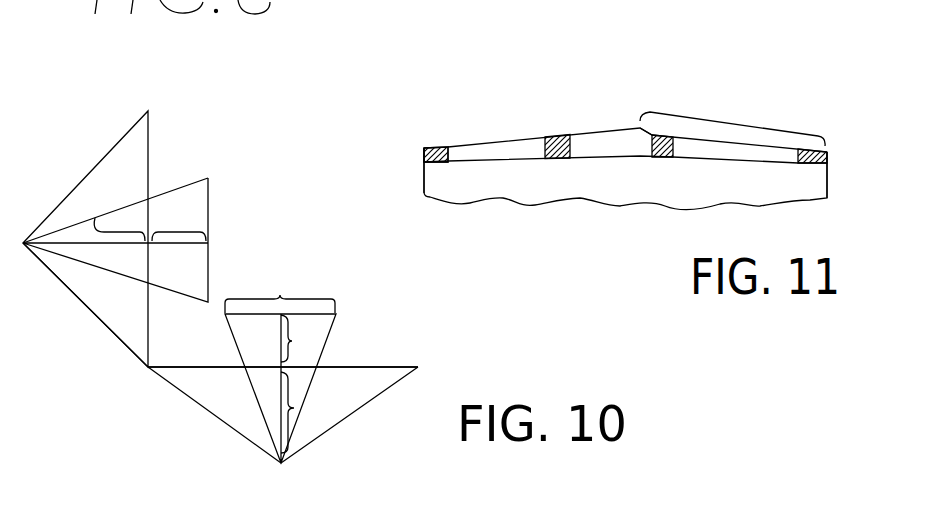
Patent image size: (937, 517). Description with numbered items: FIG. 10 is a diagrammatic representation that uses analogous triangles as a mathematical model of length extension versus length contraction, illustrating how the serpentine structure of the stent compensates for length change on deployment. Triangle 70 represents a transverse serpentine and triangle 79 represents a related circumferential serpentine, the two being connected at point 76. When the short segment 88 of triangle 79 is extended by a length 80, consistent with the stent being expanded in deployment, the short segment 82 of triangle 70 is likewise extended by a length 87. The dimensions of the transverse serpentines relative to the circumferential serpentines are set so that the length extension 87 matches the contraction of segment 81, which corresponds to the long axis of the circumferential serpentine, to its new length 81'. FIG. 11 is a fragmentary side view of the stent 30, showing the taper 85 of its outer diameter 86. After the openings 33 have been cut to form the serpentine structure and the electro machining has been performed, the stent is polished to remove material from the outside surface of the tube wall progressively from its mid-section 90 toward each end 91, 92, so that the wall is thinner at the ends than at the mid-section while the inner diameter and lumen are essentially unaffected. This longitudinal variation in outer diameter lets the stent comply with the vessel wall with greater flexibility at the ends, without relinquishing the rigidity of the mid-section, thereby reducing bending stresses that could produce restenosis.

In FIG. 10, the triangle 70 is at (88, 173).
In FIG. 10, the short segment 82 is at (95, 218).
In FIG. 10, the length extension 87 is at (180, 232).
In FIG. 10, the point 76 is at (147, 370).
In FIG. 10, the triangle 79 is at (212, 417).
In FIG. 10, the new length 81' is at (280, 271).
In FIG. 10, the length 80 is at (292, 341).
In FIG. 10, the segment 81 is at (283, 330).
In FIG. 10, the short segment 88 is at (294, 408).
In FIG. 11, the substrate 30 is at (611, 213).
In FIG. 11, the openings 33 is at (500, 147).
In FIG. 11, the outer diameter 86 is at (440, 148).
In FIG. 11, the mid-section 90 is at (633, 128).
In FIG. 11, the taper 85 is at (717, 119).
In FIG. 11, the end 91 is at (423, 170).
In FIG. 11, the end 92 is at (822, 176).